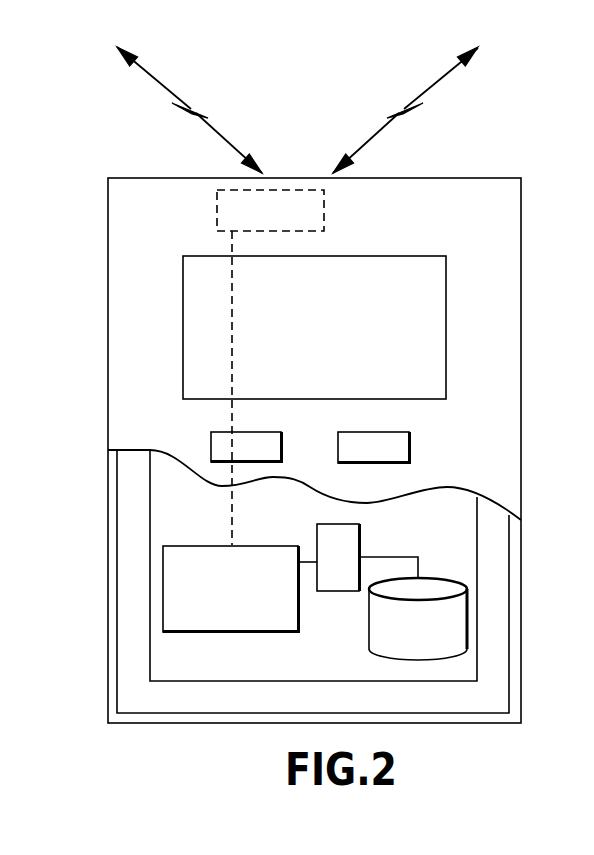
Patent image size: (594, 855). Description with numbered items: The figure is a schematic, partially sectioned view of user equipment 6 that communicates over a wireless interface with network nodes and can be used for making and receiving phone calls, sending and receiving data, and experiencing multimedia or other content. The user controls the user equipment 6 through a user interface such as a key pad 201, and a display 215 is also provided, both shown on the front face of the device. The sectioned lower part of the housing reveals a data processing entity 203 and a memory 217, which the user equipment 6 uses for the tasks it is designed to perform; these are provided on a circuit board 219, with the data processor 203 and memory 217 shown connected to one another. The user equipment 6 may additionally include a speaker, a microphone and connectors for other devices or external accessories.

The user equipment 6 is at (108, 268).
The display 215 is at (432, 352).
The key pad 201 is at (222, 445).
The data processing entity 203 is at (172, 565).
The memory 217 is at (448, 648).
The circuit board 219 is at (167, 663).